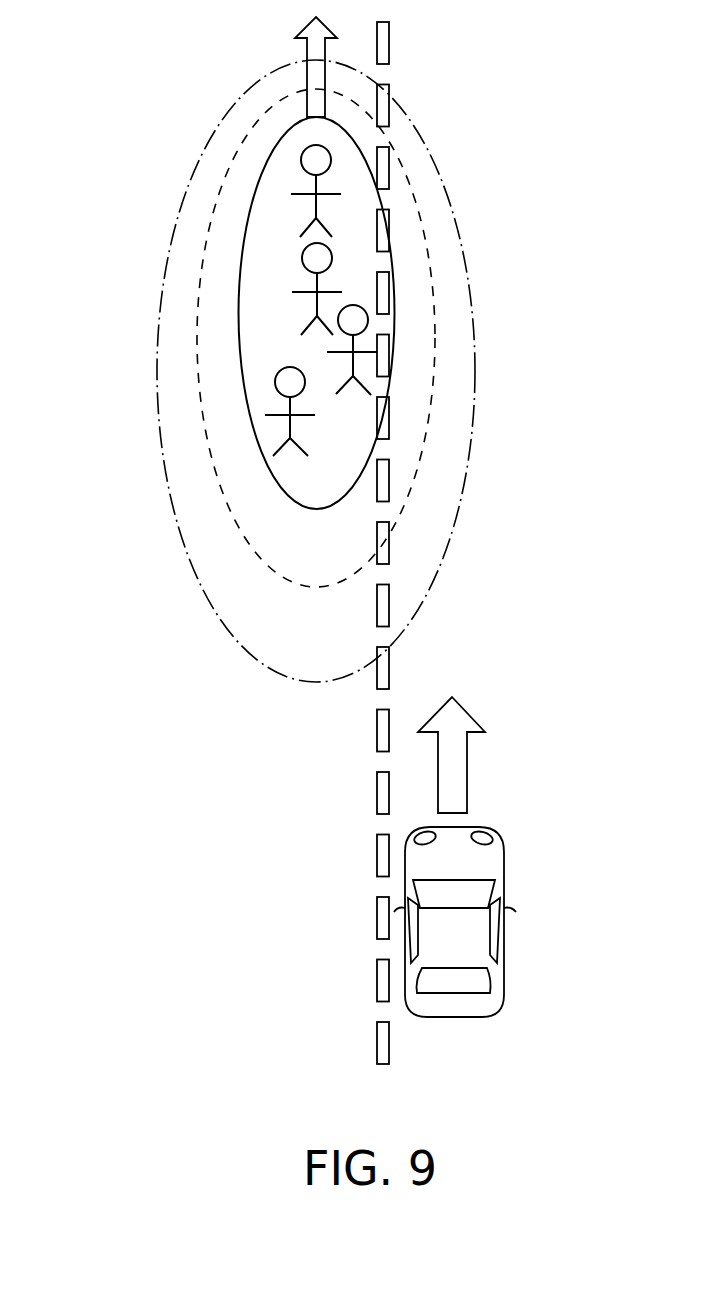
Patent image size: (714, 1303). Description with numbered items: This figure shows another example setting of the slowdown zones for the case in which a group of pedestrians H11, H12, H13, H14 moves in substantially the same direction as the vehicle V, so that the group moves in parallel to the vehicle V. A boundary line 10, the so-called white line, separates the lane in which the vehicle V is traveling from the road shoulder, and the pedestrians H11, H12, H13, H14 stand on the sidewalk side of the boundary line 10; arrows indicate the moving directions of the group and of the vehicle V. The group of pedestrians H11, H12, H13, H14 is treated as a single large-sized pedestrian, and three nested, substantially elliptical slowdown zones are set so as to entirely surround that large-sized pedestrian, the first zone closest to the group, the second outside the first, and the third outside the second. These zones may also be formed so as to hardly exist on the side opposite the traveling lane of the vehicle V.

The boundary line 10 is at (377, 790).
The vehicle V is at (503, 942).
The pedestrian H11 is at (275, 382).
The pedestrian H12 is at (315, 317).
The pedestrian H13 is at (302, 258).
The pedestrian H14 is at (301, 161).